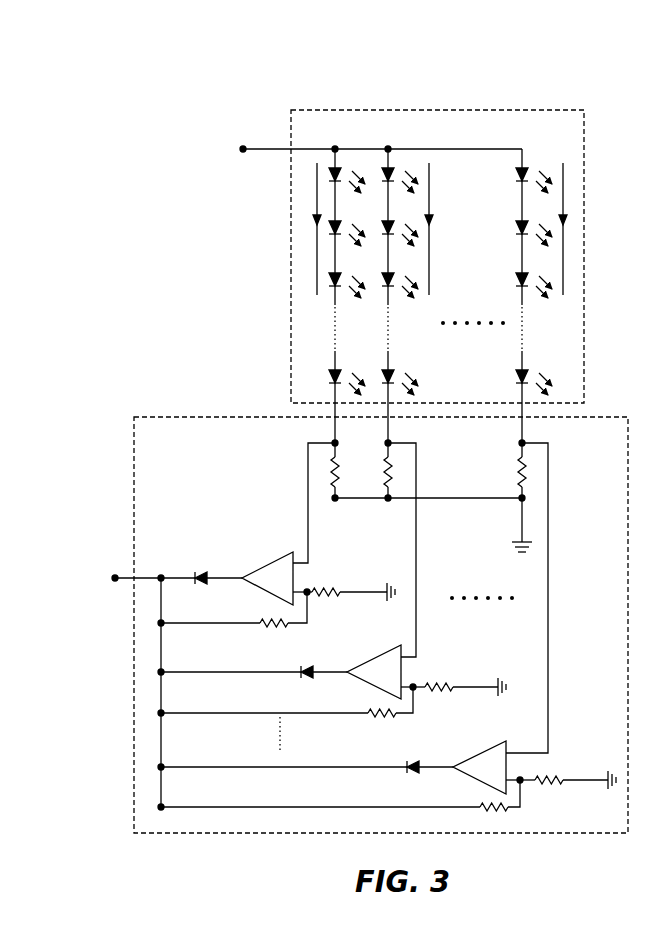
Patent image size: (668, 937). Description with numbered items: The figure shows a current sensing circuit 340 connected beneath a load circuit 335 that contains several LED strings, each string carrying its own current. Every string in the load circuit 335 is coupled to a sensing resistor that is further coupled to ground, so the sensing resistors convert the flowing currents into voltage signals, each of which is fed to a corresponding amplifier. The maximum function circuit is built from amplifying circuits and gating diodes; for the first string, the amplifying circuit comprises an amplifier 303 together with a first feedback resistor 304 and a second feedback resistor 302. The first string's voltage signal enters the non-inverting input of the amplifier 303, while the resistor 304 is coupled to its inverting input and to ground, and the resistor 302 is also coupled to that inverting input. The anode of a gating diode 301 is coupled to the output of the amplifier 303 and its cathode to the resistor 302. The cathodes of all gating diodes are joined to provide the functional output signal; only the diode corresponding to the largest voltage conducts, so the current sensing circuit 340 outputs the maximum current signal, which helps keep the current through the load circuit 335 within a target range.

The load circuit 335 is at (572, 108).
The current sensing circuit 340 is at (601, 416).
The gating diode 301 is at (206, 589).
The resistor 302 is at (234, 623).
The amplifier 303 is at (244, 567).
The resistor 304 is at (344, 585).